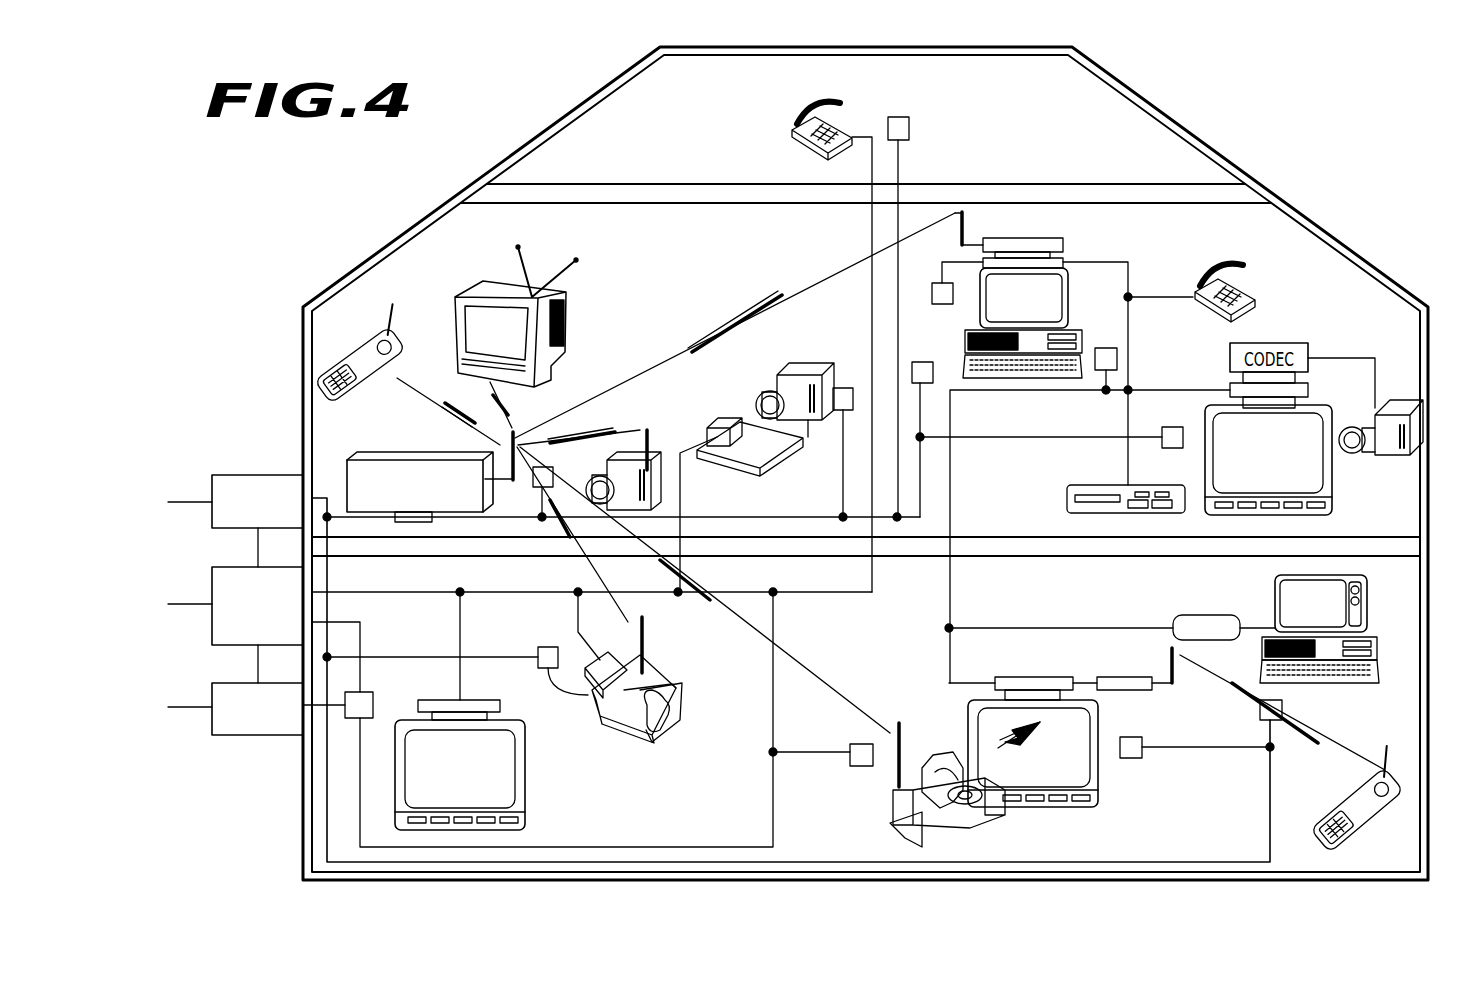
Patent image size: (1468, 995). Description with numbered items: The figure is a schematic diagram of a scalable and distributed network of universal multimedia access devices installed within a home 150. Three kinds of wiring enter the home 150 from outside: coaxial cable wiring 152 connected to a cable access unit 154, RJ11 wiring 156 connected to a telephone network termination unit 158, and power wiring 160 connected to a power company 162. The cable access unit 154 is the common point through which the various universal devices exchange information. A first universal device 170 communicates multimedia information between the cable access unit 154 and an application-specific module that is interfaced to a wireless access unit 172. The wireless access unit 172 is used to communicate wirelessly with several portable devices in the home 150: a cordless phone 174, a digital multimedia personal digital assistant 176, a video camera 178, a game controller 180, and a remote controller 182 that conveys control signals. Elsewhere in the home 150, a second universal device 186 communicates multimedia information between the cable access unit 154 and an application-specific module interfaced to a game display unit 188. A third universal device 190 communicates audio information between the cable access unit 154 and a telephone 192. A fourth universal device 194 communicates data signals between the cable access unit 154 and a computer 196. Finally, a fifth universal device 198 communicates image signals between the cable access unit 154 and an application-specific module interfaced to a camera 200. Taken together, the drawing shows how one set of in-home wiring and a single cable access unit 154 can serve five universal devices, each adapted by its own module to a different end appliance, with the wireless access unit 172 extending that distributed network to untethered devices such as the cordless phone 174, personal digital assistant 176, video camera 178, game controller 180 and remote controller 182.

The home 150 is at (1340, 245).
The coaxial cable wiring 152 is at (512, 594).
The cable access unit 154 is at (212, 567).
The RJ11 wiring 156 is at (772, 729).
The telephone network termination unit 158 is at (212, 685).
The power wiring 160 is at (329, 497).
The power company 162 is at (212, 477).
The first universal device 170 is at (413, 525).
The wireless access unit 172 is at (404, 453).
The cordless phone 174 is at (368, 352).
The digital multimedia personal digital assistant 176 is at (457, 307).
The video camera 178 is at (648, 434).
The game controller 180 is at (977, 813).
The remote controller 182 is at (660, 682).
The second universal device 186 is at (440, 698).
The game display unit 188 is at (508, 775).
The third universal device 190 is at (1218, 305).
The telephone 192 is at (1232, 268).
The fourth universal device 194 is at (1203, 615).
The computer 196 is at (1357, 605).
The fifth universal device 198 is at (728, 417).
The camera 200 is at (807, 363).